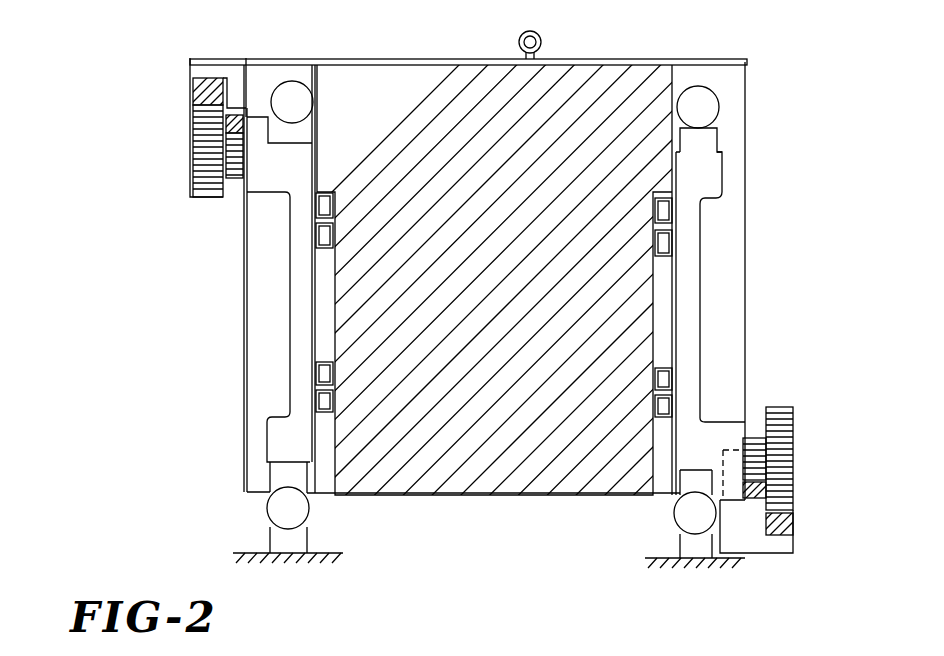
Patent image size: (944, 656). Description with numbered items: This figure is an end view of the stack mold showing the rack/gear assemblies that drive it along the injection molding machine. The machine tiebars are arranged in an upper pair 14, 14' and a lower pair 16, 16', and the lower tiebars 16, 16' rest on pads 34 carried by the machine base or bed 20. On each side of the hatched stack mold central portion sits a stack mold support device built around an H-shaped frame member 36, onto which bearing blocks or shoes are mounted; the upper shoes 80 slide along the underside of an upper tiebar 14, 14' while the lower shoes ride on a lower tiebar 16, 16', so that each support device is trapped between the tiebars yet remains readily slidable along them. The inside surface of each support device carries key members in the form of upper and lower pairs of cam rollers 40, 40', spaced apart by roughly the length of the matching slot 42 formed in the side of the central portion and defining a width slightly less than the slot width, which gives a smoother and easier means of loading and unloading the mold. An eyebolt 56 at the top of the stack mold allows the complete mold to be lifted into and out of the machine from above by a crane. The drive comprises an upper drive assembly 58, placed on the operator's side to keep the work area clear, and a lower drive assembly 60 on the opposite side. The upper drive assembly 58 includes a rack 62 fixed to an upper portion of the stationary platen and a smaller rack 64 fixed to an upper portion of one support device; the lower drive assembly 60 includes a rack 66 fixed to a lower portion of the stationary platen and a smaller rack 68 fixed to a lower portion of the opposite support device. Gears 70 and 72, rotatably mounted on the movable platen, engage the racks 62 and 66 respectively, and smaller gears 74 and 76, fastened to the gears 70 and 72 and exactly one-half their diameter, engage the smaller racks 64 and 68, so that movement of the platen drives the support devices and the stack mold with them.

The upper tiebar 14 is at (297, 73).
The upper tiebar 14' is at (740, 103).
The lower tiebar 16 is at (326, 516).
The lower tiebar 16' is at (658, 528).
The base or bed 20 is at (293, 568).
The pads 34 is at (277, 537).
The H-shaped frame member 36 is at (297, 268).
The upper cam rollers 40 is at (494, 224).
The lower cam rollers 40' is at (494, 389).
The slot 42 is at (327, 300).
The eyebolt 56 is at (550, 18).
The upper drive assembly 58 is at (184, 138).
The lower drive assembly 60 is at (804, 460).
The rack 62 is at (193, 86).
The smaller rack 64 is at (233, 113).
The rack 66 is at (790, 522).
The smaller rack 68 is at (755, 507).
The gear 70 is at (199, 198).
The gear 72 is at (790, 427).
The smaller gear 74 is at (234, 180).
The smaller gear 76 is at (750, 440).
The upper shoes 80 is at (708, 142).